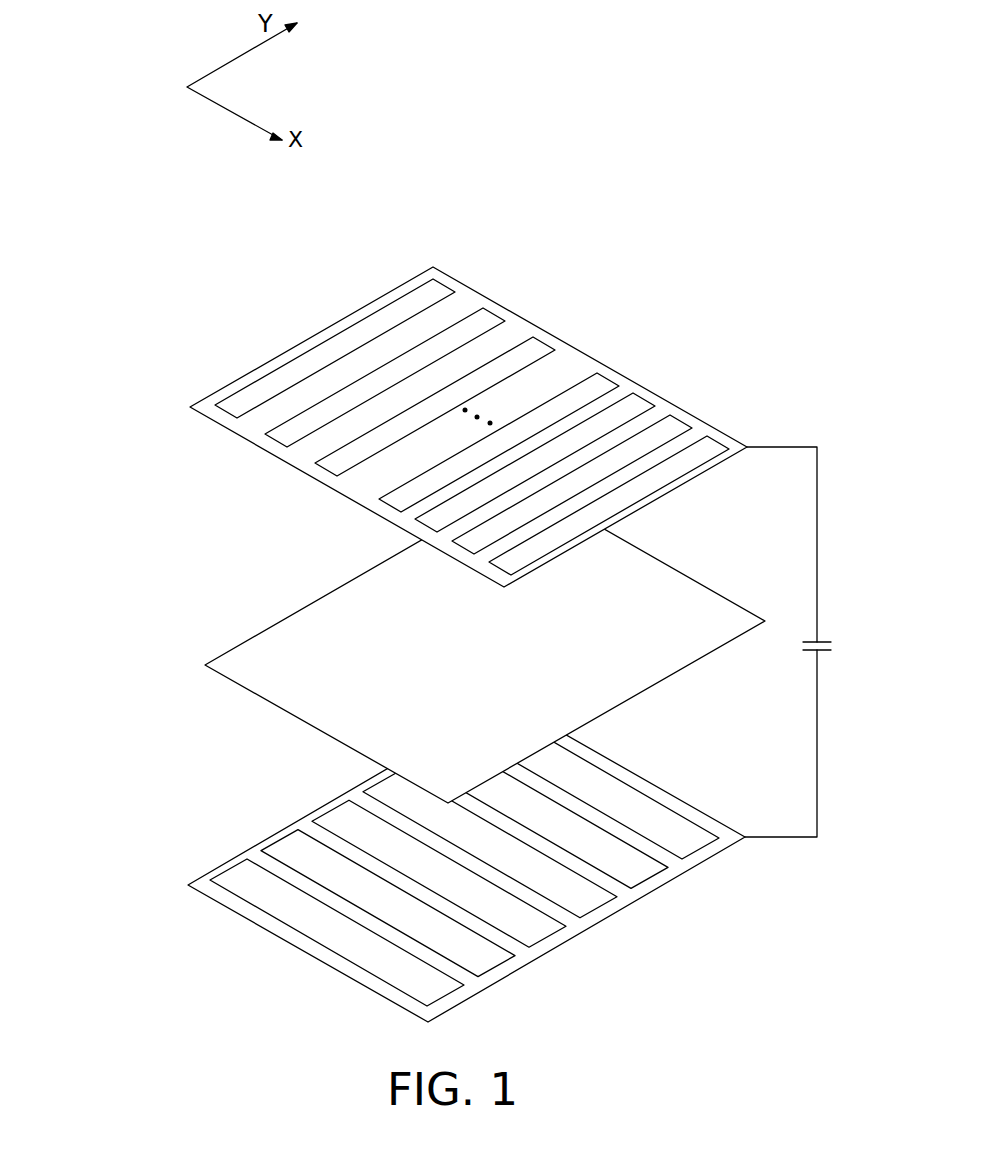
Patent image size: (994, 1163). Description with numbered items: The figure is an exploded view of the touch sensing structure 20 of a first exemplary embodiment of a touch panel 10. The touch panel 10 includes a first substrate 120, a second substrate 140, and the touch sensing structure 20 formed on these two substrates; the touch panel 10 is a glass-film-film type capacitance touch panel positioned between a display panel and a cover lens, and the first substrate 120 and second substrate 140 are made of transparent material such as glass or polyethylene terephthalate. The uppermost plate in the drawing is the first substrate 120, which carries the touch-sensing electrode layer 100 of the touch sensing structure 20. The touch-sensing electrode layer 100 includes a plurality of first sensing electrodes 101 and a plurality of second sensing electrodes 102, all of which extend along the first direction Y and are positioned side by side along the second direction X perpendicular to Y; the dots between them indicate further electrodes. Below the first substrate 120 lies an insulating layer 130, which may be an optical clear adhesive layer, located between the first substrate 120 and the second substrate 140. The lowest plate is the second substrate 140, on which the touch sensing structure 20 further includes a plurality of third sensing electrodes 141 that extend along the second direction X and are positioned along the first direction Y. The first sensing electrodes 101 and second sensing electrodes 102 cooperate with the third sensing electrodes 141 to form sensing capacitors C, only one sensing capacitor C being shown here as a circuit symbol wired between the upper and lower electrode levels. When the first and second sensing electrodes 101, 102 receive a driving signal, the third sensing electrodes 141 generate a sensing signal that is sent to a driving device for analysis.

The touch panel 10 is at (602, 152).
The touch sensing structure 20 is at (133, 572).
The touch-sensing electrode layer 100 is at (439, 430).
The first sensing electrodes 101 is at (438, 288).
The second sensing electrodes 102 is at (593, 383).
The first substrate 120 is at (560, 365).
The insulating layer 130 is at (646, 575).
The second substrate 140 is at (258, 924).
The third sensing electrodes 141 is at (286, 853).
The sensing capacitor C is at (799, 642).